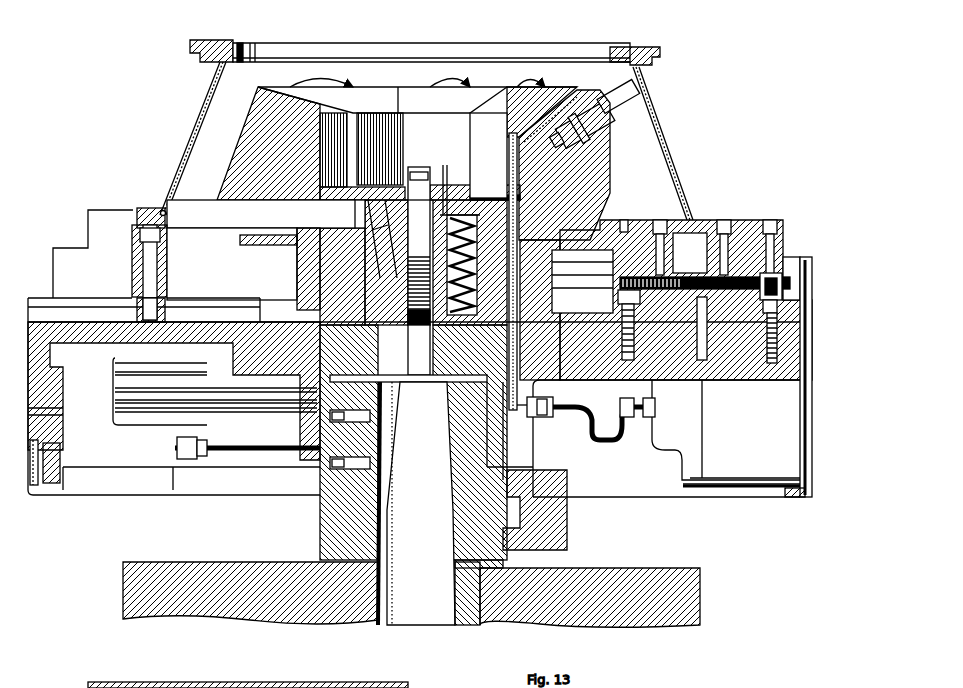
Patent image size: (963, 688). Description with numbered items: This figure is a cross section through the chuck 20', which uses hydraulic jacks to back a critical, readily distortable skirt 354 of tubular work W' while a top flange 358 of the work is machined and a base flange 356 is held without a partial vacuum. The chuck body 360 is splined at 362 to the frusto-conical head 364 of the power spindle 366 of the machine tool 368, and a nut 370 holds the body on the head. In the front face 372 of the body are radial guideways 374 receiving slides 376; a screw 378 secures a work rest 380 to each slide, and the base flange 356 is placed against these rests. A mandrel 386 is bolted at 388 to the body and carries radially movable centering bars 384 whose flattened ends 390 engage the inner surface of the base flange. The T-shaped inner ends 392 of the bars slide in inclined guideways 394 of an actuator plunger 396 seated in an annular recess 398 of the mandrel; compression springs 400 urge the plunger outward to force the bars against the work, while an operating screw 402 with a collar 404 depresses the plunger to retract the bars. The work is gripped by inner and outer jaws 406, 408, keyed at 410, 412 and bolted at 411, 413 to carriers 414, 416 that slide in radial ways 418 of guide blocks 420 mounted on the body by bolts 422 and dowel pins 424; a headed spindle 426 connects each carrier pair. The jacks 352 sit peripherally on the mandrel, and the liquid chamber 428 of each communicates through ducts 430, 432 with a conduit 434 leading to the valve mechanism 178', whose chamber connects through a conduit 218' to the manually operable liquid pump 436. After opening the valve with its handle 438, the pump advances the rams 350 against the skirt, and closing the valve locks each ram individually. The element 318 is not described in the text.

The top flange 358 is at (650, 46).
The tubular work W' is at (684, 26).
The skirt 354 is at (670, 167).
The flattened ends 390 is at (165, 213).
The hydraulic jacks 352 is at (249, 102).
The rams 350 is at (244, 111).
The liquid chamber 428 is at (603, 167).
The T-shaped inner ends 392 is at (358, 239).
The centering bars 384 is at (275, 223).
The inclined guideways 394 is at (405, 271).
The operating screw 402 is at (419, 172).
The collar 404 is at (432, 170).
The compression springs 400 is at (471, 197).
The duct 430 is at (509, 145).
The annular recess 398 is at (465, 202).
The actuator plunger 396 is at (448, 213).
The work rest 380 is at (140, 233).
The screw 378 is at (160, 263).
The guide blocks 420 is at (66, 247).
The mandrel 386 is at (313, 262).
The front face 372 is at (285, 269).
The bolt 388 is at (278, 295).
The radial guideways 374 is at (88, 313).
The slides 376 is at (166, 308).
The chuck body 360 is at (42, 330).
The conduit 434 is at (200, 375).
The conduit 218' is at (410, 443).
The handle 438 is at (34, 458).
The valve mechanism 178' is at (118, 495).
The spline 362 is at (335, 432).
The frusto-conical head 364 is at (533, 468).
The nut 370 is at (567, 525).
The power spindle 366 is at (565, 560).
The machine tool 368 is at (686, 567).
The inner jaws 406 is at (642, 220).
The bolt 411 is at (623, 220).
The key 410 is at (672, 203).
The base flange 356 is at (690, 219).
The chuck 20' is at (768, 174).
The outer jaws 408 is at (743, 221).
The key 412 is at (762, 222).
The bolt 413 is at (740, 222).
The carrier 416 is at (778, 264).
The radial ways 418 is at (687, 272).
The headed spindle 426 is at (785, 286).
The carrier 414 is at (615, 263).
The bolts 422 is at (614, 279).
The dowel pins 424 is at (699, 361).
The liquid pump 436 is at (738, 472).
The duct 432 is at (521, 394).
The base strip 318 is at (212, 684).